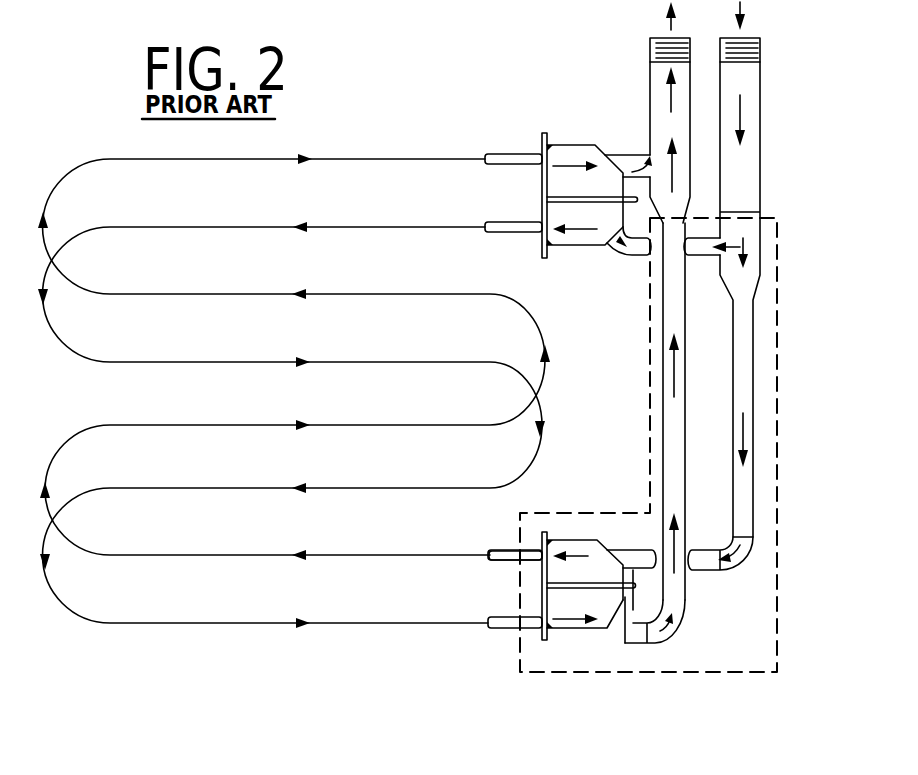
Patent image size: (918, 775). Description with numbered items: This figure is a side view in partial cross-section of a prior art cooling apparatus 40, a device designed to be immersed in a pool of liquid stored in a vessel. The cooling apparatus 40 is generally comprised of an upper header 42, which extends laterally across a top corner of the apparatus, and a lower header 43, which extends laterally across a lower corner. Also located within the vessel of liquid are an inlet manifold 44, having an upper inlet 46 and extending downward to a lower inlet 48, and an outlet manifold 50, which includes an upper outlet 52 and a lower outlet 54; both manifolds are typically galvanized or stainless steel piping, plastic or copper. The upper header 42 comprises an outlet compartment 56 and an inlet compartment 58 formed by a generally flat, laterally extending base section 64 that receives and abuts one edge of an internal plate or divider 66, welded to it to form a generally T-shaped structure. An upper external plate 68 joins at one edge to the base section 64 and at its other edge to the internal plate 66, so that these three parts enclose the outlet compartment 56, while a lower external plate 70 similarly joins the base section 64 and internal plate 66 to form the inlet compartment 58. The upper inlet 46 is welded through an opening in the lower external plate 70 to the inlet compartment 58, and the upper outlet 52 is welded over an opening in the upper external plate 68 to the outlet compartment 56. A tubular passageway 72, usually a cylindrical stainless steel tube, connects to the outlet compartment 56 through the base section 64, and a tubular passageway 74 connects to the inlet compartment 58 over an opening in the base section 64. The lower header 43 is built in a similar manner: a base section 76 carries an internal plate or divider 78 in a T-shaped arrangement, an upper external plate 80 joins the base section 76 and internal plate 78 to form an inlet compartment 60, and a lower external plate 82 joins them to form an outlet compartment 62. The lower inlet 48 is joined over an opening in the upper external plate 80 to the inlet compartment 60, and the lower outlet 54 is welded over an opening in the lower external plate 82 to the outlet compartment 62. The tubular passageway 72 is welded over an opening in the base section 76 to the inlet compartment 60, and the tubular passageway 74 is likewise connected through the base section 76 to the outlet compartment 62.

The cooling apparatus 40 is at (503, 136).
The upper header 42 is at (600, 145).
The lower header 43 is at (600, 540).
The inlet manifold 44 is at (760, 97).
The upper inlet 46 is at (628, 256).
The lower inlet 48 is at (705, 571).
The outlet manifold 50 is at (651, 80).
The upper outlet 52 is at (640, 155).
The lower outlet 54 is at (658, 645).
The outlet compartment 56 is at (577, 191).
The inlet compartment 58 is at (607, 226).
The inlet compartment 60 is at (605, 573).
The outlet compartment 62 is at (577, 613).
The base section 64 is at (540, 190).
The internal plate 66 is at (576, 197).
The upper external plate 68 is at (567, 145).
The lower external plate 70 is at (568, 247).
The tubular passageway 72 is at (498, 166).
The tubular passageway 74 is at (520, 234).
The base section 76 is at (540, 577).
The internal plate 78 is at (540, 549).
The upper external plate 80 is at (567, 540).
The lower external plate 82 is at (566, 630).